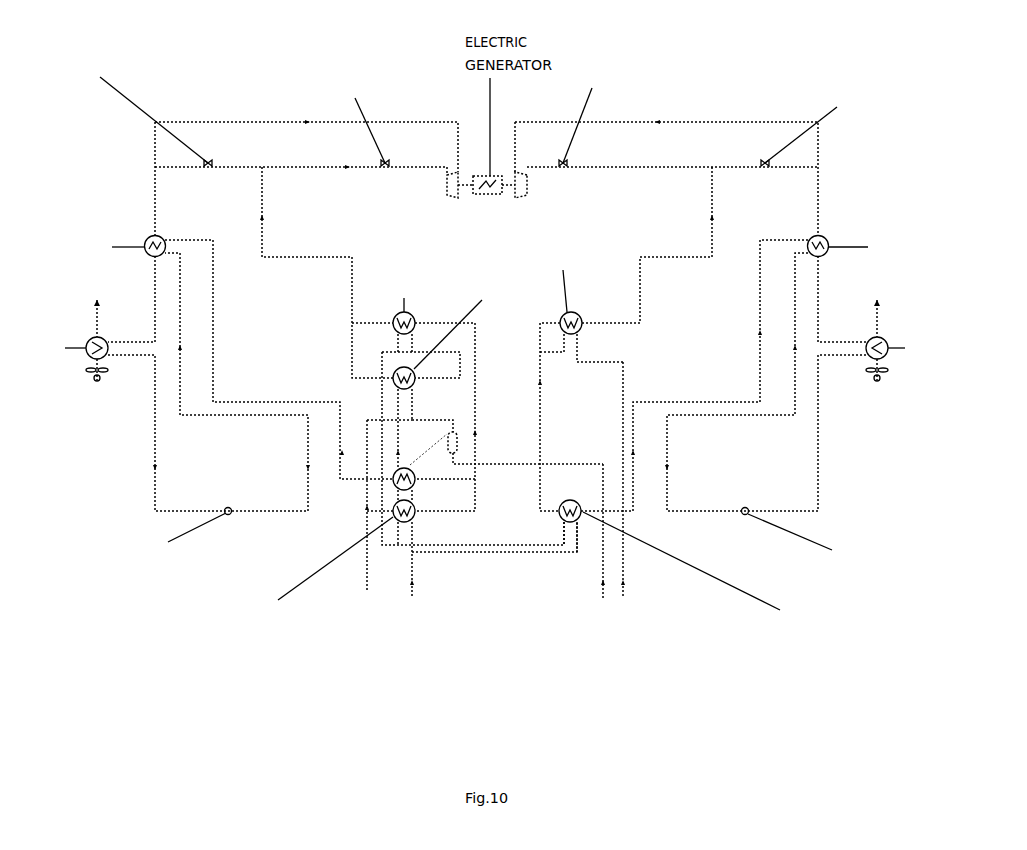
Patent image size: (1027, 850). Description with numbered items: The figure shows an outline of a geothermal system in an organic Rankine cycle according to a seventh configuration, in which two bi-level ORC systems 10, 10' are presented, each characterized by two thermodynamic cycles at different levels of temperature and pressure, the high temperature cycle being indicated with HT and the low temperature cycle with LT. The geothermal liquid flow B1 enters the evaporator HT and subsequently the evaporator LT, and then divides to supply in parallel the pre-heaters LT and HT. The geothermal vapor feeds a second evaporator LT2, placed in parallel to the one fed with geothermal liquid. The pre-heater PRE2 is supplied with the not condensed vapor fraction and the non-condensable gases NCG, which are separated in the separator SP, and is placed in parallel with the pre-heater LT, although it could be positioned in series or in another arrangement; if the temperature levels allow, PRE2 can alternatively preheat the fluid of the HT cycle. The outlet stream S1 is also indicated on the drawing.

The bi-level ORC system 10 is at (313, 330).
The bi-level ORC system 10' is at (729, 326).
The geothermal fluid stream outlet S1 is at (367, 592).
The geothermal liquid flow B1 is at (623, 587).
The pre-heater PRE2 is at (390, 485).
The separator SP is at (453, 453).
The non-condensable gases NCG is at (422, 450).